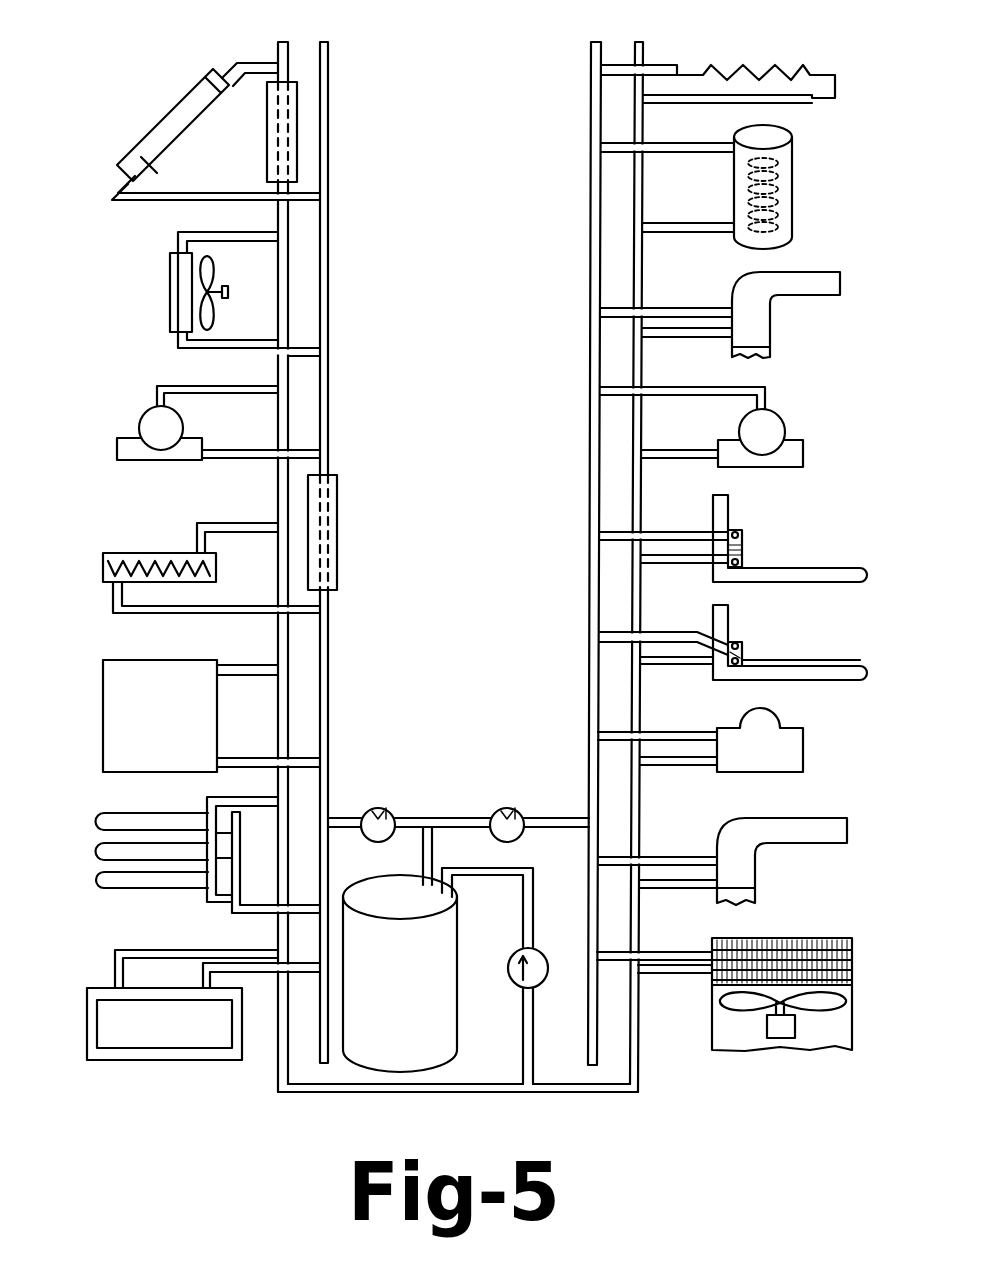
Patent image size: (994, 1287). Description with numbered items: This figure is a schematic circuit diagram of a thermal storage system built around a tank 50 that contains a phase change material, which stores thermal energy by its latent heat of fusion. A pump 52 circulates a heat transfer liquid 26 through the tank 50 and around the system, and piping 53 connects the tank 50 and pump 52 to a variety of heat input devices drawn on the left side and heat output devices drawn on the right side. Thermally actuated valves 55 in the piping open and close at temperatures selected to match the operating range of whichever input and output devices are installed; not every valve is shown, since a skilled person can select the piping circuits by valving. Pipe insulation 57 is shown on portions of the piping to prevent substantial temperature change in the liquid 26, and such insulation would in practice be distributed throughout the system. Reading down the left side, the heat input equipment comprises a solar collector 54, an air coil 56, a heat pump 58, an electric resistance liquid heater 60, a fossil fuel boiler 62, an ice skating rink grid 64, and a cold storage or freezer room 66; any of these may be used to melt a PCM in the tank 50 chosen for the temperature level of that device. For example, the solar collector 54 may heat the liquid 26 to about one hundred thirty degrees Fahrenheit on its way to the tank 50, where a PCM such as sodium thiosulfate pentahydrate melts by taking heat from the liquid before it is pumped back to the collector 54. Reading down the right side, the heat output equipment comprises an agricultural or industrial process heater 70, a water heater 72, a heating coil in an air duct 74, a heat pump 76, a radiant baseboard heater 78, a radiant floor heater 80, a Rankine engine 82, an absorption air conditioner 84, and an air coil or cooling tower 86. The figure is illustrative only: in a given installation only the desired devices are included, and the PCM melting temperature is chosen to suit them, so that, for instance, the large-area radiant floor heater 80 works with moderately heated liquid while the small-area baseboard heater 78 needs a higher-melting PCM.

The heat transfer liquid 26 is at (533, 920).
The tank 50 is at (443, 1031).
The pump 52 is at (536, 958).
The piping 53 is at (282, 728).
The solar collector 54 is at (200, 100).
The valves 55 is at (388, 808).
The air coil 56 is at (172, 300).
The pipe insulation 57 is at (272, 134).
The heat pump 58 is at (150, 424).
The electric resistance liquid heater 60 is at (148, 555).
The fossil fuel boiler 62 is at (131, 680).
The ice skating rink grid 64 is at (119, 818).
The cold storage or freezer room 66 is at (182, 1048).
The agricultural or industrial process heater 70 is at (780, 73).
The water heater 72 is at (790, 194).
The heating coil in air duct 74 is at (766, 331).
The heat pump 76 is at (770, 430).
The radiant baseboard heater 78 is at (745, 552).
The radiant floor heater 80 is at (745, 655).
The Rankine engine 82 is at (790, 752).
The absorption air conditioner 84 is at (770, 876).
The air coil or cooling tower 86 is at (780, 945).